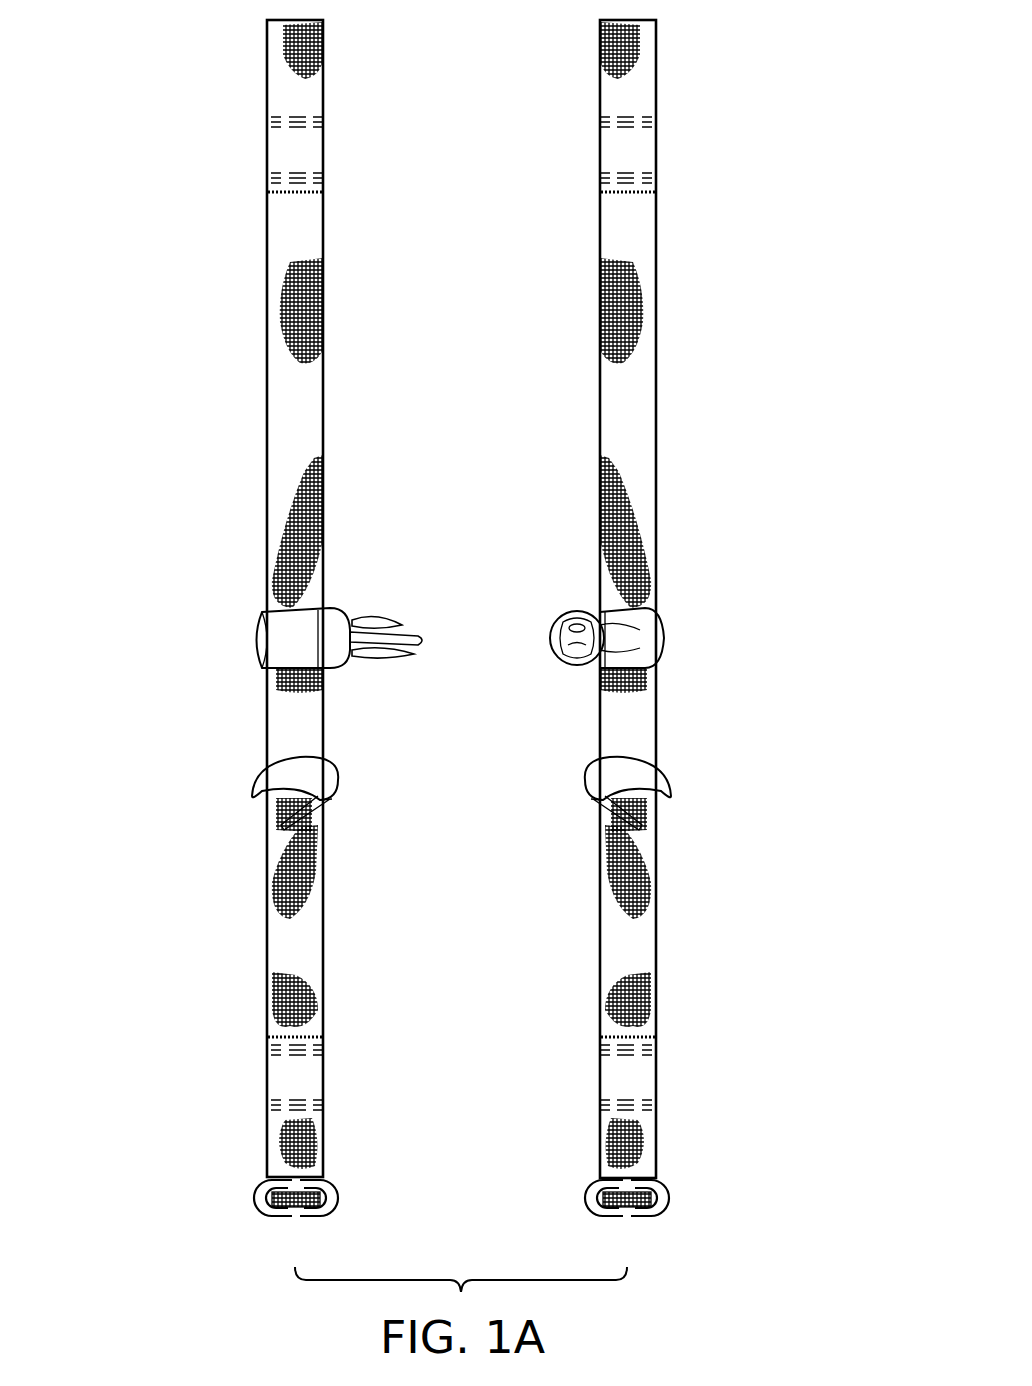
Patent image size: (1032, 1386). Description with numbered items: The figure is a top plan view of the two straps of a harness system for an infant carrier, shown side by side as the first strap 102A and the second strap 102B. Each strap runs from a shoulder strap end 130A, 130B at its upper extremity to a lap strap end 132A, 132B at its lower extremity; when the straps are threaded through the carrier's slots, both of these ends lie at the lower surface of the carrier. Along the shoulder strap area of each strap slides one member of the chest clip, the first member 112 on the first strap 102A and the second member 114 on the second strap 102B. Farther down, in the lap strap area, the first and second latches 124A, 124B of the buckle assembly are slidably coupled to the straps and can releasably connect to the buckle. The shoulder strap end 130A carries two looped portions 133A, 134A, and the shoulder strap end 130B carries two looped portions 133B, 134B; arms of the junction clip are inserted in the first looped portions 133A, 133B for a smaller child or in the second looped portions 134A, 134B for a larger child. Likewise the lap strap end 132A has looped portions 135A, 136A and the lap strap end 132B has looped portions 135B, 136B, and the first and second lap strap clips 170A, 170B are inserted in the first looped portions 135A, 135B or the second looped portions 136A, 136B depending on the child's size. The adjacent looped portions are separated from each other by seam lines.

The first strap 102A is at (280, 468).
The second strap 102B is at (645, 468).
The first member 112 is at (270, 640).
The second member 114 is at (645, 640).
The first latch 124A is at (265, 780).
The second latch 124B is at (650, 780).
The shoulder strap end 130A is at (176, 99).
The shoulder strap end 130B is at (720, 116).
The lap strap end 132A is at (152, 1119).
The lap strap end 132B is at (797, 1119).
The first looped portion 133A is at (280, 160).
The first looped portion 133B is at (645, 160).
The second looped portion 134A is at (276, 60).
The second looped portion 134B is at (647, 58).
The first looped portion 135A is at (280, 1070).
The first looped portion 135B is at (640, 1065).
The second looped portion 136A is at (266, 1142).
The second looped portion 136B is at (652, 1143).
The first lap strap clip 170A is at (256, 1197).
The second lap strap clip 170B is at (665, 1200).